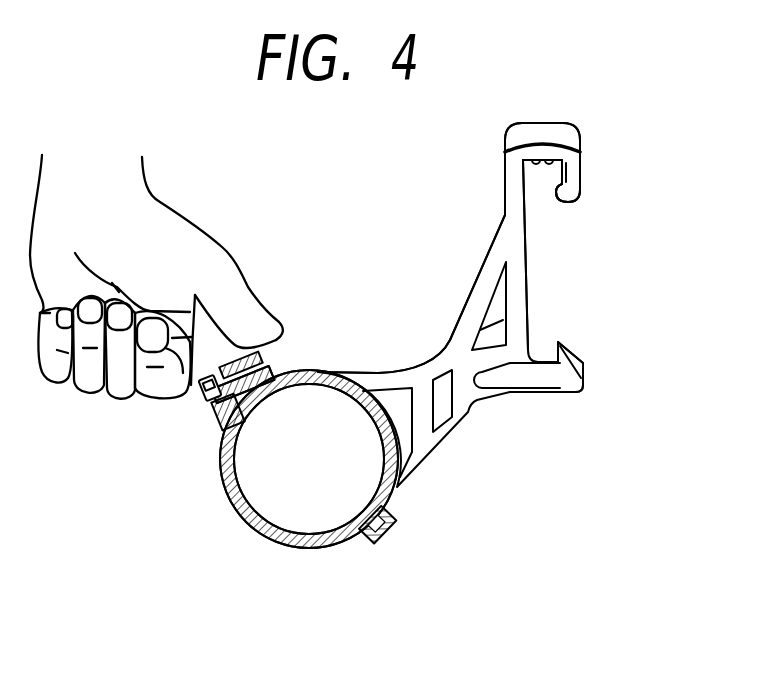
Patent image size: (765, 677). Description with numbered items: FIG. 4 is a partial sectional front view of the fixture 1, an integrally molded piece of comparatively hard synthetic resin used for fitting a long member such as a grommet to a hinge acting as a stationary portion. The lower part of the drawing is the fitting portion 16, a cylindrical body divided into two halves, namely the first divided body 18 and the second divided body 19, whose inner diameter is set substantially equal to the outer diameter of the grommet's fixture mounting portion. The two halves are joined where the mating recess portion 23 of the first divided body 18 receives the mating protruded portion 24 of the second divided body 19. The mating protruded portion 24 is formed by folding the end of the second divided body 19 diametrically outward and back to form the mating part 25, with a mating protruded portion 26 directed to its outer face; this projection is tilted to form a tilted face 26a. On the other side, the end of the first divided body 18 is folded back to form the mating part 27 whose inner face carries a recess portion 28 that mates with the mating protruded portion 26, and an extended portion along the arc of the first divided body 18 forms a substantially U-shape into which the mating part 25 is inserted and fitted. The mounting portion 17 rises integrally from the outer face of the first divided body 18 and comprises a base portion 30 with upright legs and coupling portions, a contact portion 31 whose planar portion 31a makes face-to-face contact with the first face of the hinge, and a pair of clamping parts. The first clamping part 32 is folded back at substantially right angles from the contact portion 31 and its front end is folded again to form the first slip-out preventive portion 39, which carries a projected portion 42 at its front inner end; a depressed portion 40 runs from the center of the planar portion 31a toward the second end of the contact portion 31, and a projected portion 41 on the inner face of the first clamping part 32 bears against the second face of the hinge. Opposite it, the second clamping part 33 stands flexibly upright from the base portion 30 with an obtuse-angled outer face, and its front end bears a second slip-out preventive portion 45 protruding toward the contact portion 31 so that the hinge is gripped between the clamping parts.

The fixture 1 is at (464, 328).
The fitting portion 16 is at (285, 480).
The mounting portion 17 is at (585, 110).
The first divided body 18 is at (431, 519).
The second divided body 19 is at (309, 514).
The mating recess portion 23 is at (233, 281).
The mating protruded portion 24 is at (182, 478).
The mating part 25 is at (170, 443).
The mating protruded portion 26 is at (149, 427).
The tilted face 26a is at (137, 410).
The mating part 27 is at (248, 303).
The recess portion 28 is at (290, 320).
The base portion 30 is at (384, 328).
The contact portion 31 is at (458, 272).
The planar portion 31a is at (577, 255).
The first clamping part 32 is at (542, 95).
The second clamping part 33 is at (567, 404).
The first slip-out preventive portion 39 is at (626, 165).
The depressed portion 40 is at (495, 157).
The projected portion 41 is at (563, 220).
The projected portion 42 is at (613, 220).
The second slip-out preventive portion 45 is at (631, 367).